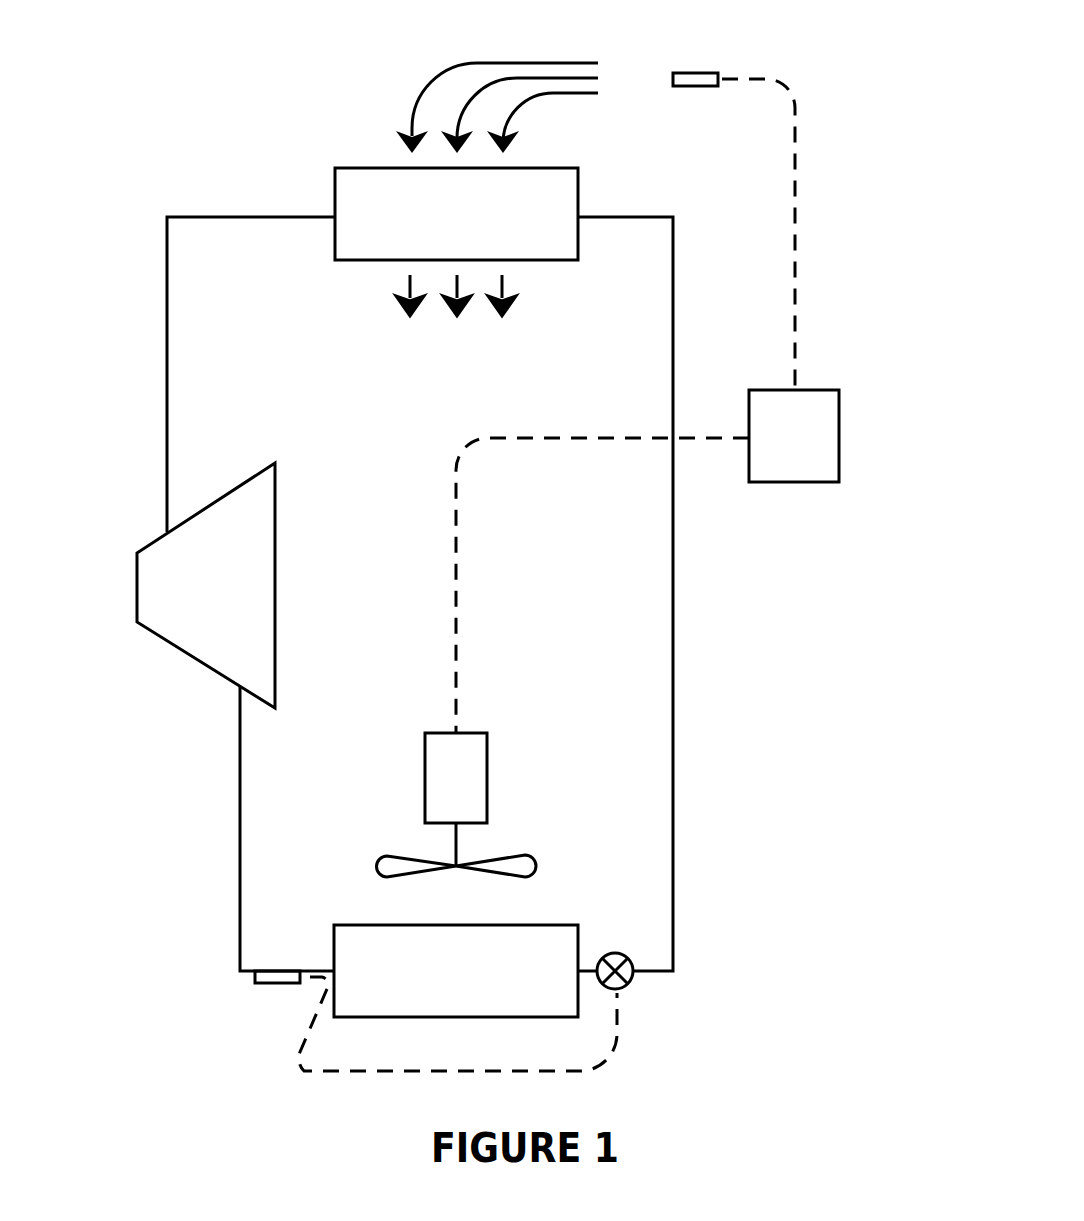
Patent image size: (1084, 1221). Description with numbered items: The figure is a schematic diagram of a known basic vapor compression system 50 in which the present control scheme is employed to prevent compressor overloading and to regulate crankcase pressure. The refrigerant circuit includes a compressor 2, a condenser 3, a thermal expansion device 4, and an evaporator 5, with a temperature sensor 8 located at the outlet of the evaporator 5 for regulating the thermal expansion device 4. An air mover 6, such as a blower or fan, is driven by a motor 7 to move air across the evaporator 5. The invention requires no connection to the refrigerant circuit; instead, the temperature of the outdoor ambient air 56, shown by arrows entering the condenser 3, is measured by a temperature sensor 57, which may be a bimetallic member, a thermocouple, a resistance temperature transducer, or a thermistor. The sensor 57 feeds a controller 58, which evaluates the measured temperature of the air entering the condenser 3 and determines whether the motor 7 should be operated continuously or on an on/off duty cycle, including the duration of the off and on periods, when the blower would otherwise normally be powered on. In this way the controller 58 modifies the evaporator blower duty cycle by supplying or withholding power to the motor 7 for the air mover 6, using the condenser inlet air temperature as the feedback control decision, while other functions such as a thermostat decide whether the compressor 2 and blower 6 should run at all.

The waste heat recovery system 50 is at (389, 485).
The outdoor ambient air 56 is at (591, 54).
The temperature sensor 57 is at (724, 70).
The controller 58 is at (845, 437).
The condenser 3 is at (547, 232).
The compressor 2 is at (247, 547).
The motor 7 is at (470, 782).
The air mover 6 is at (540, 861).
The evaporator 5 is at (524, 951).
The thermal expansion device 4 is at (636, 989).
The temperature sensor 8 is at (285, 966).